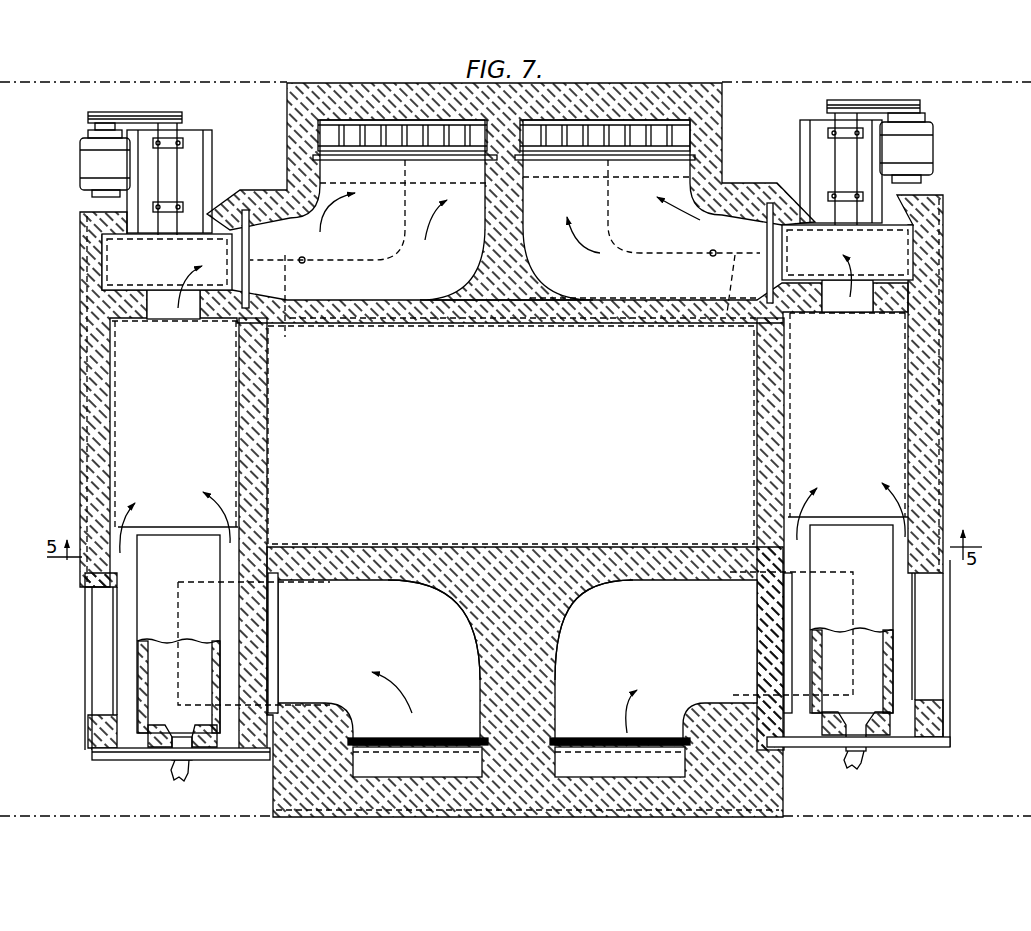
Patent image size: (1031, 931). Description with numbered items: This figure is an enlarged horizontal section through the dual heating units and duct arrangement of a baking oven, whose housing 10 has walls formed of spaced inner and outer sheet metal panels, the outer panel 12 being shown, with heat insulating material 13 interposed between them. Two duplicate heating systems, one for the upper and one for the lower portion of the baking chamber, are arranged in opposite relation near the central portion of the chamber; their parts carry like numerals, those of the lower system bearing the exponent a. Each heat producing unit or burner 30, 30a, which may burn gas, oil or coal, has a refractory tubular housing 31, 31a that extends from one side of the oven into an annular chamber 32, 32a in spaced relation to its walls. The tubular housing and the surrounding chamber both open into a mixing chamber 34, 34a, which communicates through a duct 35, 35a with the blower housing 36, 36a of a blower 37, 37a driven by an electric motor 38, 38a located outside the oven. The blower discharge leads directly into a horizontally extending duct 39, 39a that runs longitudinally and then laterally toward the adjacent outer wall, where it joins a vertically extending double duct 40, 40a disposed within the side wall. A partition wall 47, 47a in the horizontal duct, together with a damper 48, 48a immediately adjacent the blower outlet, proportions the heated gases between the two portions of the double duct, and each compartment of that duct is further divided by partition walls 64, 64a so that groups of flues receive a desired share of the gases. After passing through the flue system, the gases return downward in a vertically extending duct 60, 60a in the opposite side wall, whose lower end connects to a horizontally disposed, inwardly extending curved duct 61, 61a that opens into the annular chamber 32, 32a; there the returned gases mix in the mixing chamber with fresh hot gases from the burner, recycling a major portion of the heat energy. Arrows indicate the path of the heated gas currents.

The housing 10 is at (712, 79).
The outer sheet metal panel 12 is at (750, 810).
The heat insulating material 13 is at (700, 810).
The heat producing unit 30 is at (127, 626).
The heat producing unit 30a is at (903, 600).
The tubular housing 31 is at (152, 589).
The tubular housing 31a is at (897, 682).
The chamber 32 is at (120, 564).
The chamber 32a is at (907, 643).
The mixing chamber 34 is at (160, 395).
The mixing chamber 34a is at (882, 405).
The duct 35 is at (158, 310).
The duct 35a is at (860, 297).
The blower housing 36 is at (116, 270).
The blower housing 36a is at (897, 263).
The blower 37 is at (128, 254).
The blower 37a is at (888, 243).
The electric motor 38 is at (103, 157).
The electric motor 38a is at (920, 155).
The horizontally extending duct 39 is at (383, 280).
The horizontally extending duct 39a is at (583, 283).
The vertically extending double duct 40 is at (400, 133).
The vertically extending double duct 40a is at (613, 133).
The partition wall 47 is at (385, 248).
The partition wall 47a is at (627, 253).
The damper 48 is at (298, 307).
The damper 48a is at (700, 313).
The vertically extending duct 60 is at (370, 780).
The vertically extending duct 60a is at (600, 780).
The curved duct 61 is at (315, 617).
The curved duct 61a is at (640, 597).
The partition walls 64 is at (341, 132).
The partition walls 64a is at (547, 130).